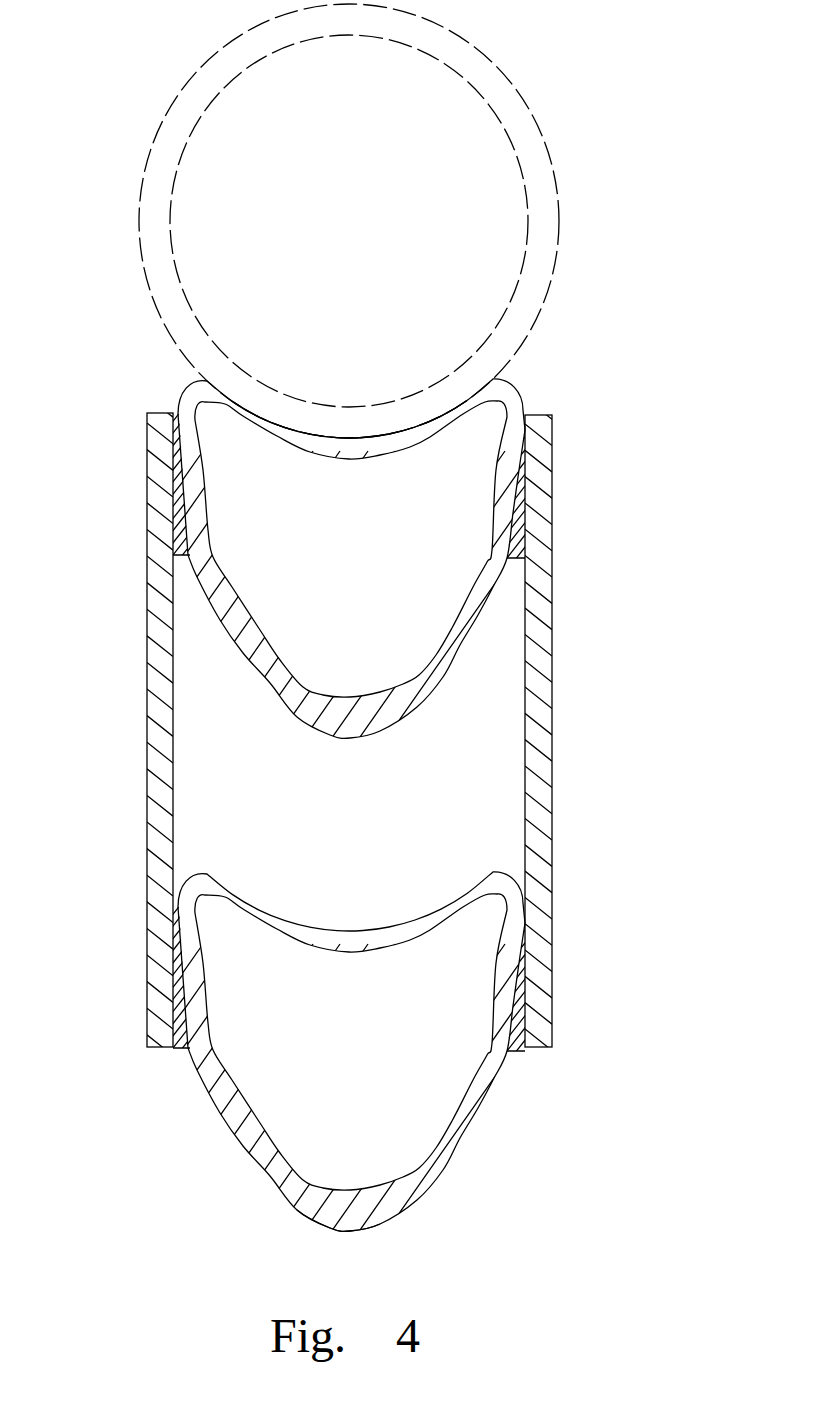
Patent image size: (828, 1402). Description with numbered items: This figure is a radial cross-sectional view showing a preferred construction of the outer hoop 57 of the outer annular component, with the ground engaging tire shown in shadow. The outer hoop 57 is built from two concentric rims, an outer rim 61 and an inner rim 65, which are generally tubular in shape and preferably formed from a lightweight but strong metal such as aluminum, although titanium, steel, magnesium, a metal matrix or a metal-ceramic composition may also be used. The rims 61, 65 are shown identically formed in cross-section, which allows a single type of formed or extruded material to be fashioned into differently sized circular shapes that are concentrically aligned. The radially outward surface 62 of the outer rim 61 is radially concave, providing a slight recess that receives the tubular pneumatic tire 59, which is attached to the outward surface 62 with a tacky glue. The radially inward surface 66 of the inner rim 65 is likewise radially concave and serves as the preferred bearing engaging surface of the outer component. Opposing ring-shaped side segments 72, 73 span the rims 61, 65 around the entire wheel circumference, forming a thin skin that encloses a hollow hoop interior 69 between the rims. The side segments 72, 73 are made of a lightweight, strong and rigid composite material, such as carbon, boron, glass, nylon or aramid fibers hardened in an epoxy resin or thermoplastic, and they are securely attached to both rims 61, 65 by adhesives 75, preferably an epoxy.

The outer hoop 57 is at (602, 556).
The pneumatic tire 59 is at (548, 218).
The outer rim 61 is at (414, 638).
The radially outward surface 62 is at (425, 428).
The inner rim 65 is at (414, 1137).
The radially inward surface 66 is at (347, 1233).
The hollow hoop interior 69 is at (470, 842).
The side segment 72 is at (163, 792).
The side segment 73 is at (540, 793).
The adhesives 75 is at (187, 556).